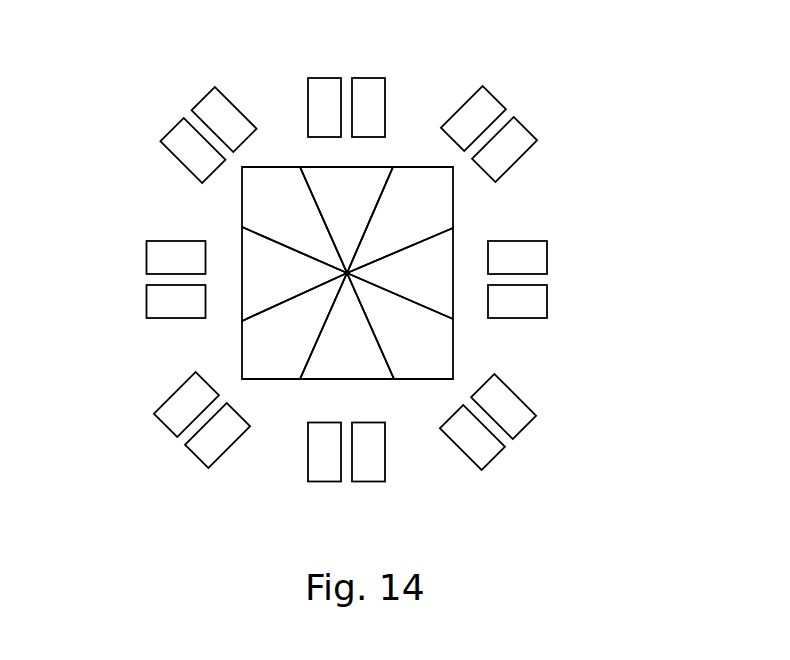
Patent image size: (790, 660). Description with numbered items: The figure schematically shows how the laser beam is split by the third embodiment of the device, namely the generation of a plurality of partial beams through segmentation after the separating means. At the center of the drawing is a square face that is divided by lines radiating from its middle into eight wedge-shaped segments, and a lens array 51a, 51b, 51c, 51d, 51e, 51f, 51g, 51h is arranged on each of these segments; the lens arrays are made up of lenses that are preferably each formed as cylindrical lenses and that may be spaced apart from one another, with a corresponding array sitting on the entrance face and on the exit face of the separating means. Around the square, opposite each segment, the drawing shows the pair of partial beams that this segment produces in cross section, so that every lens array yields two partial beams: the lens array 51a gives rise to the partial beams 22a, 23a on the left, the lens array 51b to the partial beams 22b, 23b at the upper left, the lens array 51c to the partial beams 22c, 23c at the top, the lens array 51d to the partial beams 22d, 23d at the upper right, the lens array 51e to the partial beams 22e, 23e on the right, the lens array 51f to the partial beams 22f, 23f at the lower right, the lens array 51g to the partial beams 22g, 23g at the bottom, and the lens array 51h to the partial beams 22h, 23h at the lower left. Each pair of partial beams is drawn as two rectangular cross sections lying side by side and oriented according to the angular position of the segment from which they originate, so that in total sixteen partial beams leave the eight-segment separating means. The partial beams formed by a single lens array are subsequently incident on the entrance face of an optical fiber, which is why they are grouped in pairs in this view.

The partial beam 22a is at (152, 305).
The partial beam 23a is at (152, 250).
The lens array 51a is at (295, 297).
The partial beam 22b is at (173, 137).
The partial beam 23b is at (213, 100).
The lens array 51b is at (302, 219).
The partial beam 22c is at (324, 82).
The partial beam 23c is at (372, 82).
The lens array 51c is at (367, 202).
The partial beam 22d is at (485, 100).
The partial beam 23d is at (520, 147).
The lens array 51d is at (433, 219).
The partial beam 22e is at (533, 252).
The partial beam 23e is at (533, 305).
The lens array 51e is at (433, 277).
The partial beam 22f is at (532, 422).
The partial beam 23f is at (490, 457).
The lens array 51f is at (427, 344).
The partial beam 22g is at (373, 470).
The partial beam 23g is at (320, 473).
The lens array 51g is at (362, 357).
The partial beam 22h is at (207, 453).
The partial beam 23h is at (168, 412).
The lens array 51h is at (295, 344).